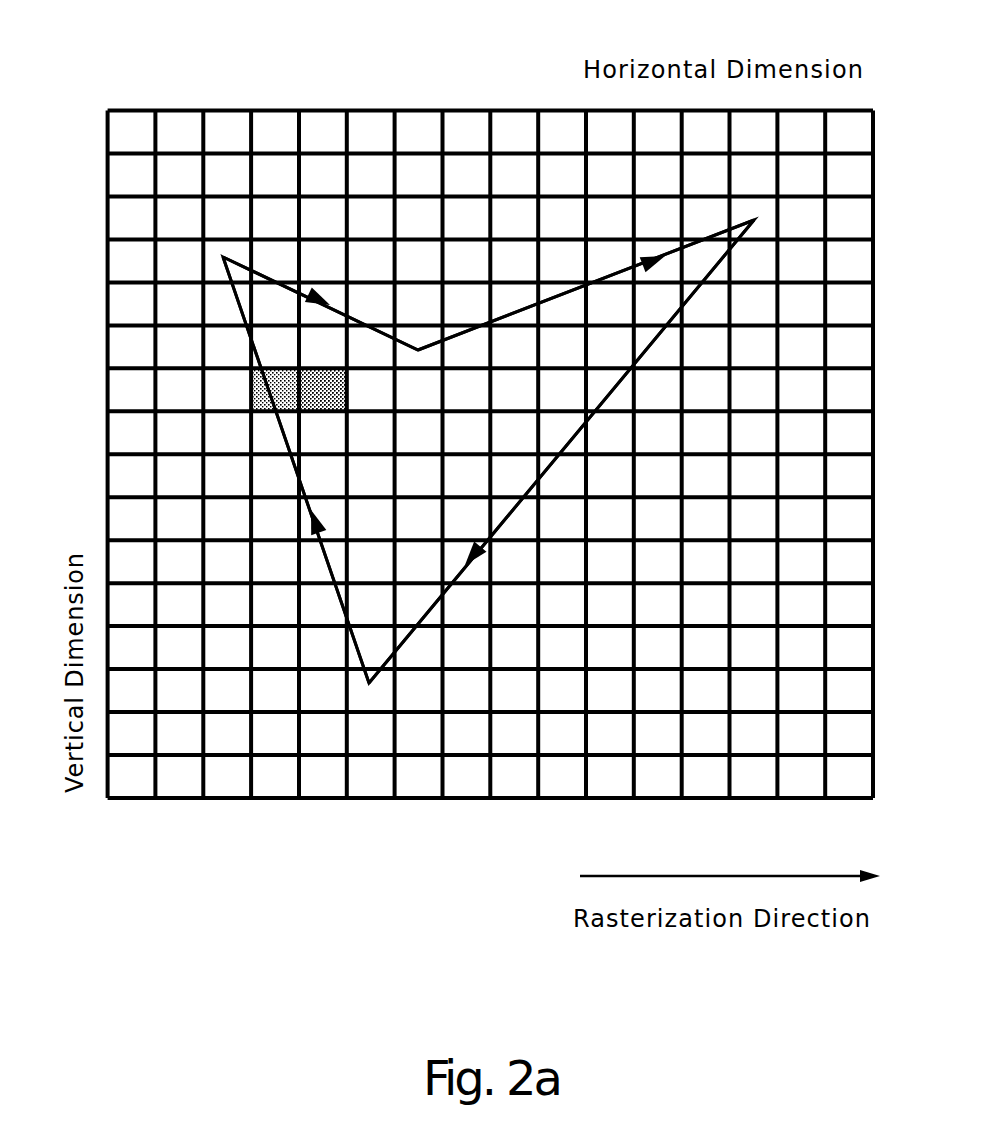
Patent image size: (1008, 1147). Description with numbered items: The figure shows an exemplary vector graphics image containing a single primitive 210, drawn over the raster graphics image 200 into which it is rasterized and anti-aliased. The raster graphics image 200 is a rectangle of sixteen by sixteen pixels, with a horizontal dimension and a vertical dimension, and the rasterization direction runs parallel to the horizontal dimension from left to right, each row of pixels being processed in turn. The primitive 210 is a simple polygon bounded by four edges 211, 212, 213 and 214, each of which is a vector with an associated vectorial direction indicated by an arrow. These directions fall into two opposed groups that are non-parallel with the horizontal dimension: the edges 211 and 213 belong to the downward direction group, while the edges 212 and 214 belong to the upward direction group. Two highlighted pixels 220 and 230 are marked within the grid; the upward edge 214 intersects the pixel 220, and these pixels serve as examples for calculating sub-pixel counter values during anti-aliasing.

The raster graphics image 200 is at (137, 98).
The primitive 210 is at (418, 470).
The edge 211 is at (260, 272).
The edge 212 is at (512, 312).
The edge 213 is at (499, 528).
The upward edge 214 is at (314, 527).
The pixel 220 is at (250, 405).
The pixel 230 is at (323, 397).